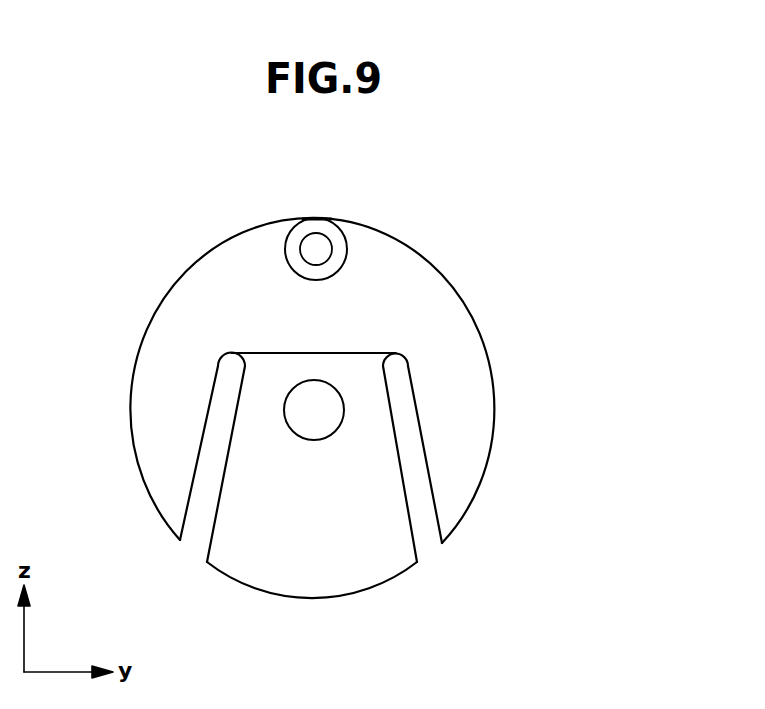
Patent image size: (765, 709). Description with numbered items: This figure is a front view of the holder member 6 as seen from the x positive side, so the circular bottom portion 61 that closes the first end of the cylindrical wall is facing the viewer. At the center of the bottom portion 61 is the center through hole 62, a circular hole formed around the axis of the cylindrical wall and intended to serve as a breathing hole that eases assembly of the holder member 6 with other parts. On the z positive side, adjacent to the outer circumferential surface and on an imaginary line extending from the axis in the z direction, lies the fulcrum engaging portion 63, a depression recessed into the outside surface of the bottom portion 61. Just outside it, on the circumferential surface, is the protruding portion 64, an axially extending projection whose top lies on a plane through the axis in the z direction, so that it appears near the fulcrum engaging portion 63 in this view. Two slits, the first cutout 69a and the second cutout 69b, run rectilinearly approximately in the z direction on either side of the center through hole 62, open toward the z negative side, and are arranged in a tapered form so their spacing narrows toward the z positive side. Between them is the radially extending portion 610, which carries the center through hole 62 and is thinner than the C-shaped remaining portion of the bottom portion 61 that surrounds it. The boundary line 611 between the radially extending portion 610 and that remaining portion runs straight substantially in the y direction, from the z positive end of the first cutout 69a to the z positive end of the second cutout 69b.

The holder member 6 is at (368, 410).
The bottom portion 61 is at (519, 326).
The radially extending portion 610 is at (306, 429).
The boundary line 611 is at (272, 352).
The center through hole 62 is at (295, 432).
The fulcrum engaging portion 63 is at (318, 247).
The protruding portion 64 is at (314, 217).
The first cutout 69a is at (184, 518).
The second cutout 69b is at (438, 522).